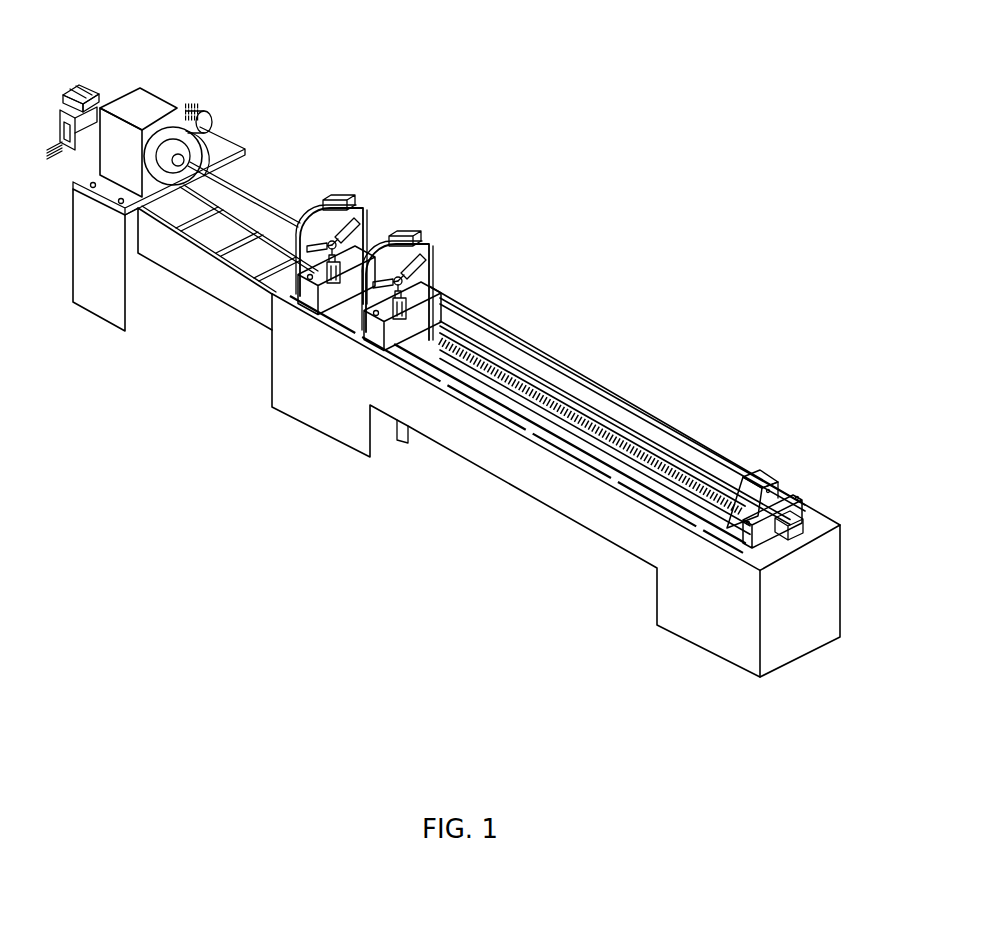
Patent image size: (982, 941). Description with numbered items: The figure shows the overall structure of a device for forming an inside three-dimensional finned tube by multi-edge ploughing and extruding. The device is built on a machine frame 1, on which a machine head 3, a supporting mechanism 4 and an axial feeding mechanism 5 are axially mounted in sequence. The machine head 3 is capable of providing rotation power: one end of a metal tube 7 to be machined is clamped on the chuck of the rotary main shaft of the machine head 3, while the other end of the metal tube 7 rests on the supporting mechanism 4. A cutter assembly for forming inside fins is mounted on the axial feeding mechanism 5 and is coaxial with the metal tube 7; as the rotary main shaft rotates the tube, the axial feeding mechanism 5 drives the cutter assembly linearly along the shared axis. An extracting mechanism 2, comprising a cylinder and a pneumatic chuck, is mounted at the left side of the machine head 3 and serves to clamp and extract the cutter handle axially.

The machine frame 1 is at (315, 407).
The extracting mechanism 2 is at (88, 92).
The machine head 3 is at (143, 105).
The supporting mechanism 4 is at (414, 238).
The axial feeding mechanism 5 is at (769, 481).
The metal tube 7 is at (243, 186).